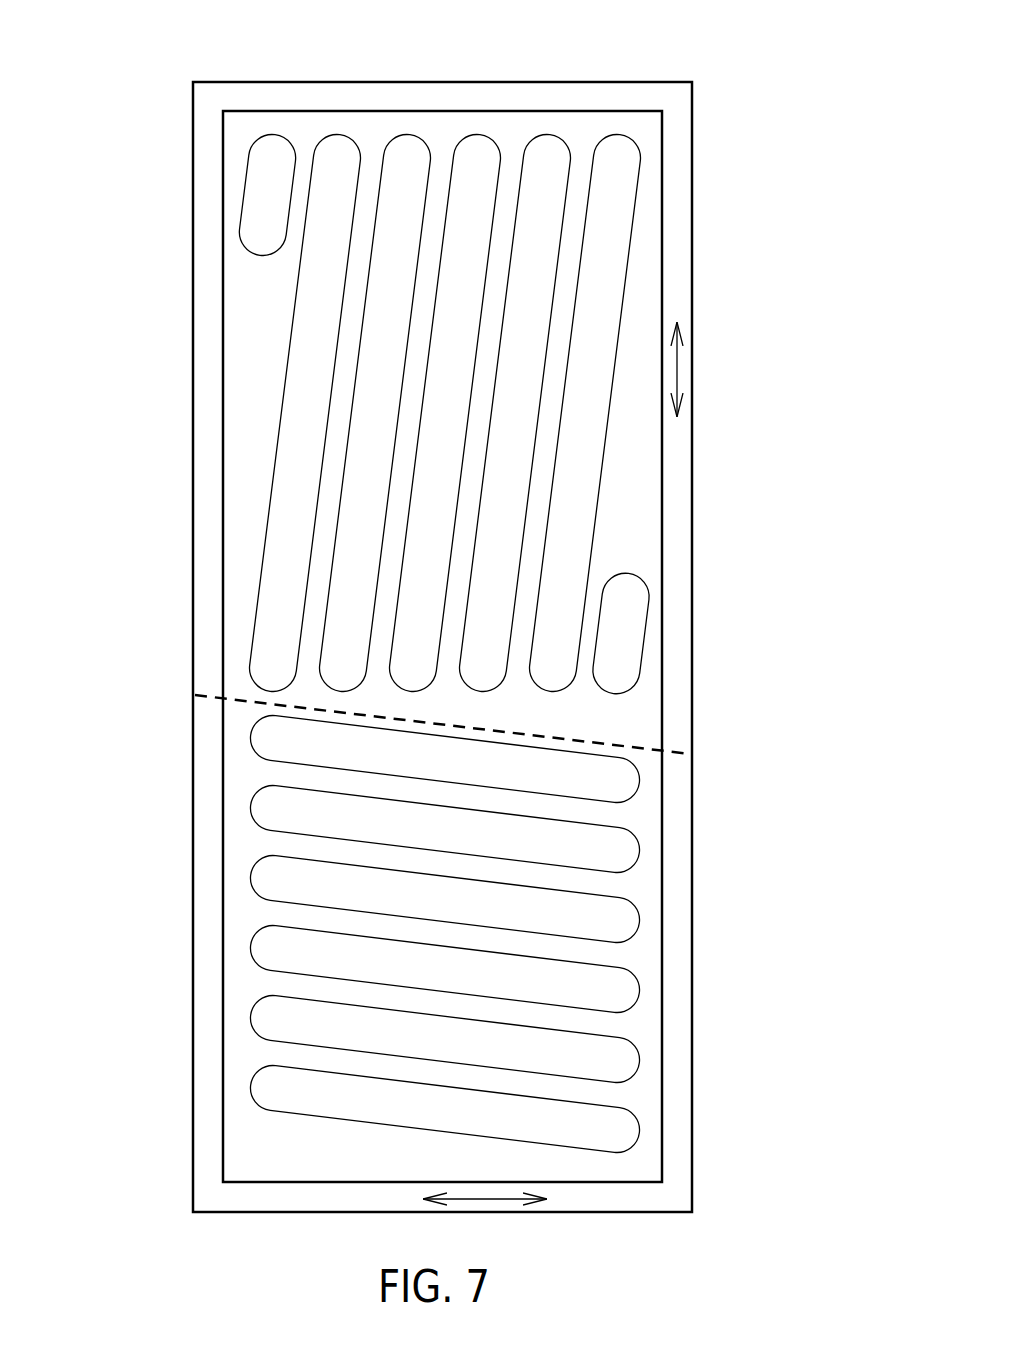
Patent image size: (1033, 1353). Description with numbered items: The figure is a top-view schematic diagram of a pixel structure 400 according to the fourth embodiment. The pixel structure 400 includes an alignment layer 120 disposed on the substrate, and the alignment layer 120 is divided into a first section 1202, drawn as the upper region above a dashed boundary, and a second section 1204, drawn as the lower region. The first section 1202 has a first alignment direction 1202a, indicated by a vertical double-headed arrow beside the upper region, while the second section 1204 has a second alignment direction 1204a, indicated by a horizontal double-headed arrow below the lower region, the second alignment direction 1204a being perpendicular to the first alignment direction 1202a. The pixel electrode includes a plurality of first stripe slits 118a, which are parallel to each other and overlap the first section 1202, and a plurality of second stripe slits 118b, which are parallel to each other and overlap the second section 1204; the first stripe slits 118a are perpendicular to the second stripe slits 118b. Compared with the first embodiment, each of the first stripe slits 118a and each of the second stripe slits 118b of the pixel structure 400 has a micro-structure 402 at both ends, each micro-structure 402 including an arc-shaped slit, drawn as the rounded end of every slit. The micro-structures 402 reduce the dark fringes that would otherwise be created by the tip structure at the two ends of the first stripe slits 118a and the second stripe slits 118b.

The pixel structure 400 is at (716, 95).
The alignment layer 120 is at (692, 226).
The micro-structure 402 is at (439, 588).
The first stripe slit 118a is at (273, 214).
The second stripe slit 118b is at (350, 934).
The first section 1202 is at (680, 563).
The first alignment direction 1202a is at (679, 370).
The second section 1204 is at (682, 910).
The second alignment direction 1204a is at (487, 1200).